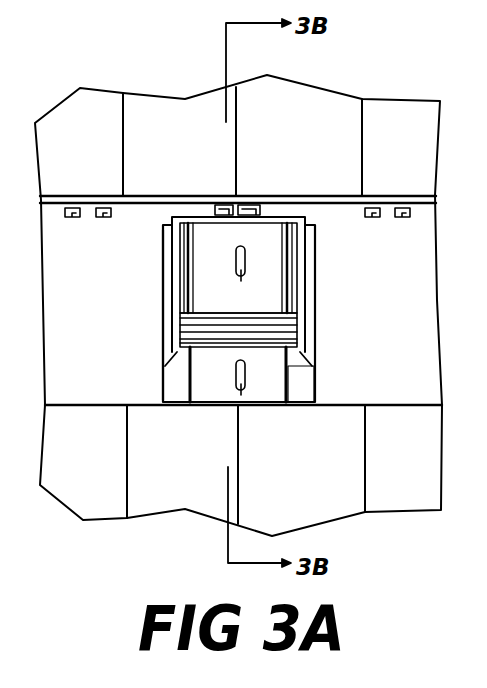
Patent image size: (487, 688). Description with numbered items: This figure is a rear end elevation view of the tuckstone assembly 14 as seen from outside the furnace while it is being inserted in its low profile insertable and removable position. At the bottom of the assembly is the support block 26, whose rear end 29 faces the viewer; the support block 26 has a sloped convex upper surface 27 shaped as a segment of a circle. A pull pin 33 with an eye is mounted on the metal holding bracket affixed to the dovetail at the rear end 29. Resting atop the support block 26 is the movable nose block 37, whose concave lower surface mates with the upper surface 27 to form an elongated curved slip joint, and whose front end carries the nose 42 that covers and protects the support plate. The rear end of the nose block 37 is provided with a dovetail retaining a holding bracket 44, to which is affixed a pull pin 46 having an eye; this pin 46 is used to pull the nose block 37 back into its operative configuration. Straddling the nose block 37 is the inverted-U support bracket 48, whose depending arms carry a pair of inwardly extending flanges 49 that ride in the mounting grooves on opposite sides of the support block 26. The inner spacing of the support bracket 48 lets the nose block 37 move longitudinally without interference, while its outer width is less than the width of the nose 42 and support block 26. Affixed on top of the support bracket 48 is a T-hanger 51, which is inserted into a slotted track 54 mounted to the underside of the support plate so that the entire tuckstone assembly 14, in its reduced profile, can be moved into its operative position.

The tuckstone assembly 14 is at (336, 243).
The support block 26 is at (303, 384).
The upper surface 27 is at (293, 332).
The rear end 29 is at (212, 398).
The pull pin 33 is at (178, 377).
The nose block 37 is at (305, 283).
The nose 42 is at (168, 302).
The holding bracket 44 is at (318, 268).
The pull pin 46 is at (232, 258).
The support bracket 48 is at (176, 323).
The flanges 49 is at (174, 353).
The T-hanger 51 is at (228, 205).
The slotted track 54 is at (263, 210).